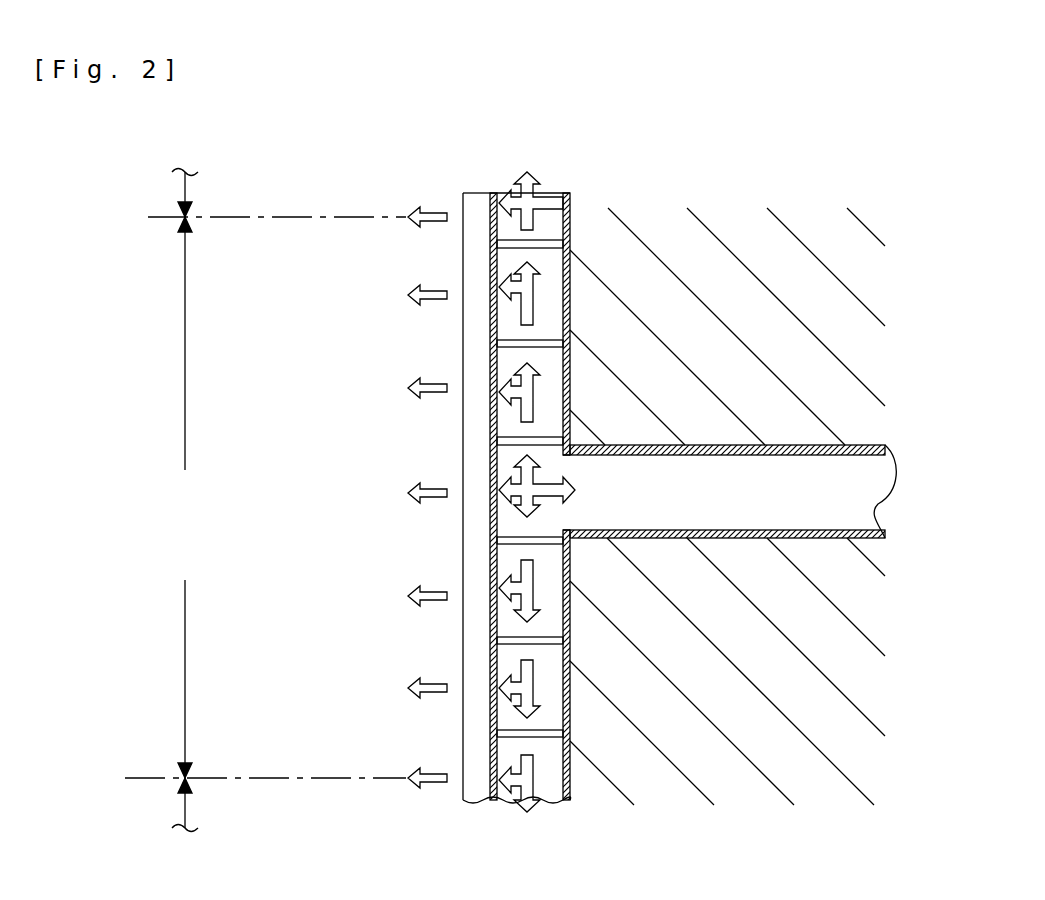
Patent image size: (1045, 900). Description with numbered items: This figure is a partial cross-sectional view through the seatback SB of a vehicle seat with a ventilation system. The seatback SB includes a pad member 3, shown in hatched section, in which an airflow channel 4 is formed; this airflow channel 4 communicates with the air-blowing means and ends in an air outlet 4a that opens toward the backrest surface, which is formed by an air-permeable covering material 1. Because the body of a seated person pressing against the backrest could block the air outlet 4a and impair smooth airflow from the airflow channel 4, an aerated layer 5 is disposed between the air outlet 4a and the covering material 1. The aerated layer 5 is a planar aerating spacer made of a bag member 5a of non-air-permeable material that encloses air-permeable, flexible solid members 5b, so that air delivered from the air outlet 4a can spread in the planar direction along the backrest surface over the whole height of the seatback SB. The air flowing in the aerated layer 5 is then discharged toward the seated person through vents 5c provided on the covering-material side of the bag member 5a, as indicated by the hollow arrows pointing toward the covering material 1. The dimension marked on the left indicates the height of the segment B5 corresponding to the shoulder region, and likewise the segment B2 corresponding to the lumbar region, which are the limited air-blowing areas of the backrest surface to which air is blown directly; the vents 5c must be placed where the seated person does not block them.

The covering material 1 is at (482, 413).
The pad member 3 is at (822, 630).
The airflow channel 4 is at (729, 488).
The air outlet 4a is at (578, 532).
The aerated layer 5 is at (546, 220).
The bag member 5a is at (568, 228).
The solid member 5b is at (566, 344).
The vent 5c is at (490, 275).
The seatback SB is at (440, 468).
The segment B5 is at (265, 500).
The segment B2 is at (265, 500).